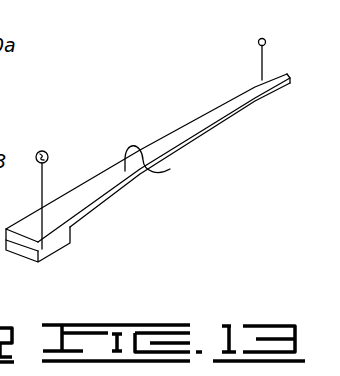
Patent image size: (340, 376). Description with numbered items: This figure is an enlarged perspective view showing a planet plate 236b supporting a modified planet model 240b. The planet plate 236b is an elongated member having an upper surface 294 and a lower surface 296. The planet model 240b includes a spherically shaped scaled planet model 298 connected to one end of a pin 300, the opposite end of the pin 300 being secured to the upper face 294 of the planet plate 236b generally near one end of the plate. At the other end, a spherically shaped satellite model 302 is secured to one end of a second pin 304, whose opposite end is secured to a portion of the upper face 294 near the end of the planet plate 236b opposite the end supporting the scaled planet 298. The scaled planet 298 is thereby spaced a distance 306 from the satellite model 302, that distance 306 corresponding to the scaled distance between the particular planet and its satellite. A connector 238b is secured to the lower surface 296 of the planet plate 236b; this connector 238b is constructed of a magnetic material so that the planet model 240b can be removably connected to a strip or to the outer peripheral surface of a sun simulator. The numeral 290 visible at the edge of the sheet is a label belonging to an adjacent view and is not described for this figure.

The upper surface 294 is at (107, 183).
The lower surface 296 is at (222, 124).
The scaled planet model 298 is at (42, 150).
The pin 300 is at (50, 175).
The satellite model 302 is at (262, 37).
The pin 304 is at (263, 60).
The distance 306 is at (262, 57).
The planet plate 236b is at (172, 164).
The connector 238b is at (56, 250).
The modified planet model 240b is at (58, 152).
The member 290 is at (15, 184).